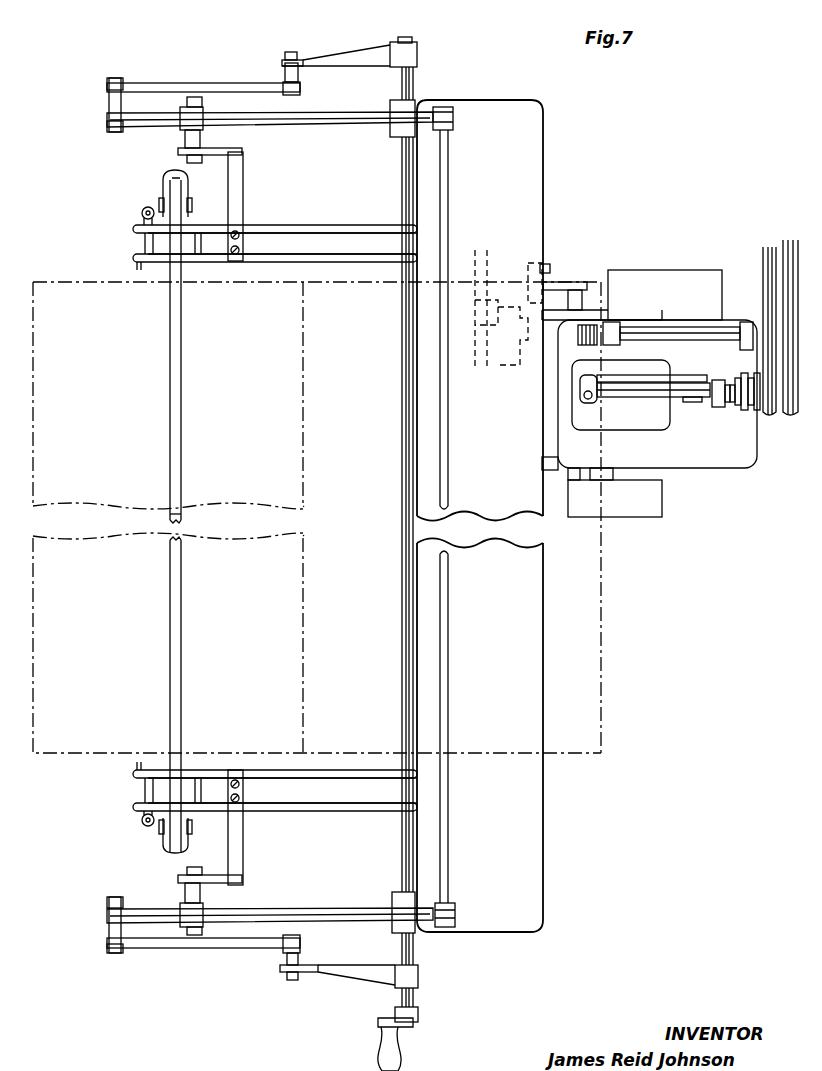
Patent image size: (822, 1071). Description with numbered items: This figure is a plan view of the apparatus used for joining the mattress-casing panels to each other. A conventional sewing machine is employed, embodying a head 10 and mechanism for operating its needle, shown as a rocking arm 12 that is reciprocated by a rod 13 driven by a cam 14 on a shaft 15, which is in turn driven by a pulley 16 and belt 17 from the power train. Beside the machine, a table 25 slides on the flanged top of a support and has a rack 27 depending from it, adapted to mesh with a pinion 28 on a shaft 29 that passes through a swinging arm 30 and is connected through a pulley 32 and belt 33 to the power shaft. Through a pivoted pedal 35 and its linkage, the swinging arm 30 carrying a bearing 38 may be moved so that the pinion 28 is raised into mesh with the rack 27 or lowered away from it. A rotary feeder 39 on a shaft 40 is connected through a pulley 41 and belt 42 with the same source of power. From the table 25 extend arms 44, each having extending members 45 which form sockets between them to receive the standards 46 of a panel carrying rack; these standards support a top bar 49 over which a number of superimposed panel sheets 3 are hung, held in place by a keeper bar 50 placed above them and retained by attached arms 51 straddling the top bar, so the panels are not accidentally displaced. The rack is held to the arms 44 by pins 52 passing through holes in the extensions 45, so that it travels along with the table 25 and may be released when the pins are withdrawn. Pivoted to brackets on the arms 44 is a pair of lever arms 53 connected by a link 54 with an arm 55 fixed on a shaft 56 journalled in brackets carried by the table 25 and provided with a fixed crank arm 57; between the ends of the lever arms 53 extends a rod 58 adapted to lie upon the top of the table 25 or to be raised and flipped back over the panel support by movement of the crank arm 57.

The panel sheets 3 is at (317, 517).
The head 10 is at (678, 376).
The rocking arm 12 is at (678, 400).
The rod 13 is at (716, 380).
The cam 14 is at (727, 403).
The shaft 15 is at (732, 404).
The pulley 16 is at (740, 378).
The belt 17 is at (750, 412).
The table 25 is at (480, 516).
The rack 27 is at (487, 365).
The pinion 28 is at (478, 308).
The shaft 29 is at (598, 313).
The swinging arm 30 is at (528, 333).
The pulley 32 is at (770, 246).
The belt 33 is at (792, 240).
The pivoted pedal 35 is at (602, 487).
The bearing 38 is at (528, 305).
The rotary feeder 39 is at (583, 346).
The shaft 40 is at (680, 341).
The pulley 41 is at (770, 405).
The belt 42 is at (766, 418).
The arms 44 is at (282, 518).
The extending members 45 is at (133, 228).
The standards 46 is at (197, 246).
The top bar 49 is at (184, 510).
The keeper bar 50 is at (182, 625).
The arms 51 is at (186, 846).
The pins 52 is at (143, 209).
The lever arms 53 is at (323, 126).
The link 54 is at (187, 86).
The arm 55 is at (347, 60).
The shaft 56 is at (401, 838).
The crank arm 57 is at (382, 1020).
The rod 58 is at (449, 660).